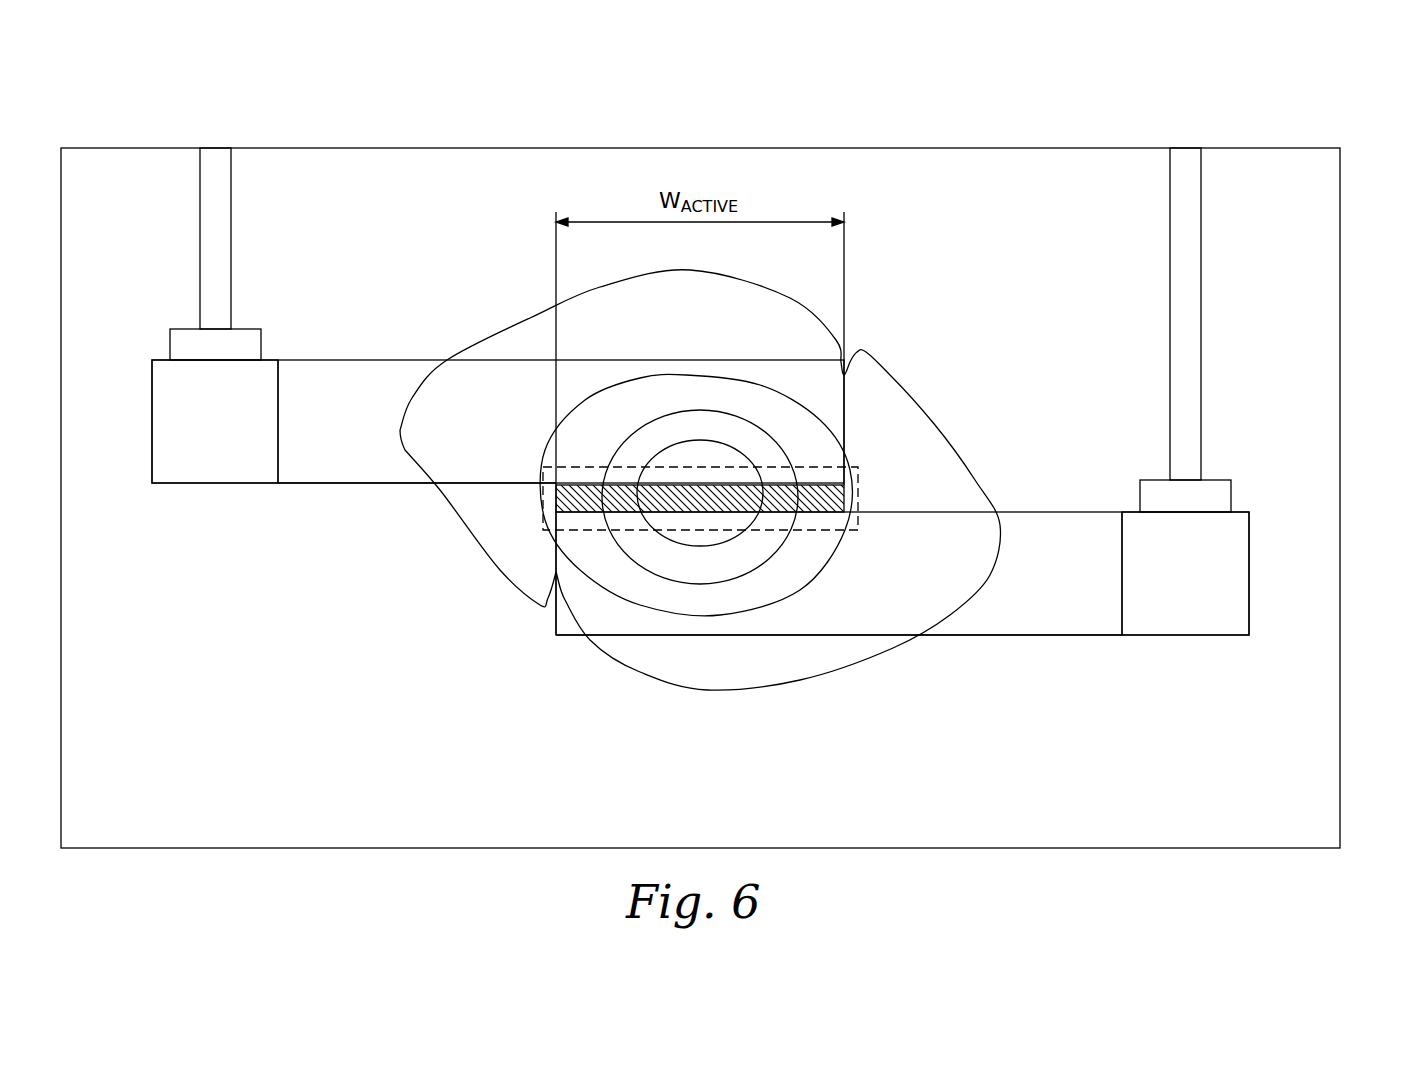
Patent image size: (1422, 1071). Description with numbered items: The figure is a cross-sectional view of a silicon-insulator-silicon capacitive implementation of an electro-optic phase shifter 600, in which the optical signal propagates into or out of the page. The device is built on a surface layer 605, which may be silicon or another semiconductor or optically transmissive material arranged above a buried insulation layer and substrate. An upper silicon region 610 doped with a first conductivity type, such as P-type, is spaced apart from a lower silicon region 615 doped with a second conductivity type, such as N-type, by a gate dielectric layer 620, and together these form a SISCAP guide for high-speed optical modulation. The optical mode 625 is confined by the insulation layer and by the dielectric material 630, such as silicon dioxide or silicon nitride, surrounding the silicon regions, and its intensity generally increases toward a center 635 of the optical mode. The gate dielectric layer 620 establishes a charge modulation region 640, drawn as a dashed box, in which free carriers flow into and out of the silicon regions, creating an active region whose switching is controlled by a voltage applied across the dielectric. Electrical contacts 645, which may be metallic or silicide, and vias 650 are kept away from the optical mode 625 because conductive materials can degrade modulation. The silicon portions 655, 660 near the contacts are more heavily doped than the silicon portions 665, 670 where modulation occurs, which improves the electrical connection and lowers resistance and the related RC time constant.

The electro-optic phase shifter 600 is at (1310, 70).
The surface layer 605 is at (155, 848).
The upper silicon region 610 is at (222, 523).
The lower silicon region 615 is at (1096, 464).
The gate dielectric layer 620 is at (577, 496).
The optical mode 625 is at (720, 690).
The dielectric material 630 is at (1233, 190).
The center of the optical mode 635 is at (697, 460).
The charge modulation region 640 is at (858, 490).
The electrical contacts 645 is at (170, 341).
The vias 650 is at (200, 231).
The heavily-doped silicon portion 655 is at (152, 420).
The heavily-doped silicon portion 660 is at (1249, 572).
The silicon portion 665 is at (340, 483).
The silicon portion 670 is at (1047, 635).